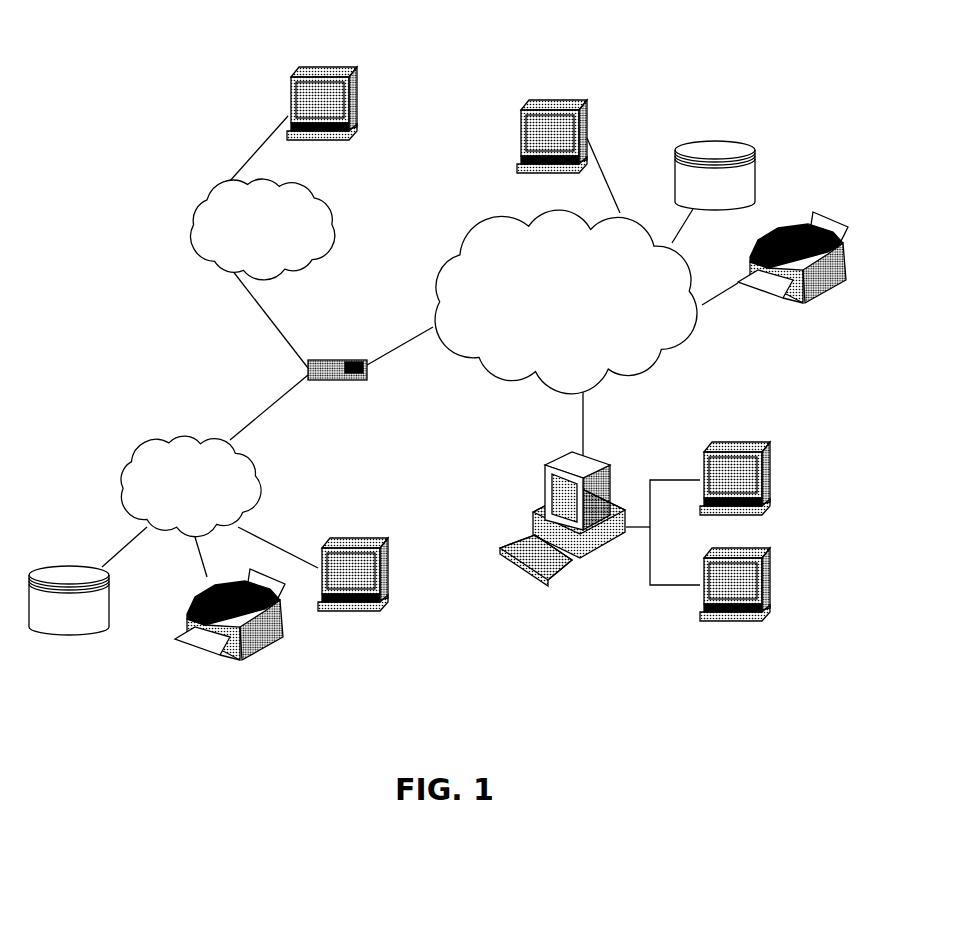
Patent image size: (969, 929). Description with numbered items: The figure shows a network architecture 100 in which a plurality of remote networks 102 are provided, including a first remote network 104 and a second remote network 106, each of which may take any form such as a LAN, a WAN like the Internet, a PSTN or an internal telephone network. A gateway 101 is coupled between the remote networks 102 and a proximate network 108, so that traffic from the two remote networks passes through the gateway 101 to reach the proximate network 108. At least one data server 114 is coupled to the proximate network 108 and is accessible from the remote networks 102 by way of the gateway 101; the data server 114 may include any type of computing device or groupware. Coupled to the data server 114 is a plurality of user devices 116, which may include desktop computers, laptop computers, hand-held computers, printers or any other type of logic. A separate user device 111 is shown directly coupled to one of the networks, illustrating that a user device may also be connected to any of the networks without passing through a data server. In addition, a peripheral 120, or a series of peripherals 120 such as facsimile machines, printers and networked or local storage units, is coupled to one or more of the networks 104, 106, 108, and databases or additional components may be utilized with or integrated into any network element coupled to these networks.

The network architecture 100 is at (238, 44).
The gateway 101 is at (324, 360).
The remote networks 102 is at (176, 248).
The first remote network 104 is at (128, 463).
The second remote network 106 is at (328, 201).
The proximate network 108 is at (666, 365).
The user device 111 is at (588, 109).
The data server 114 is at (600, 556).
The user devices 116 is at (357, 96).
The peripheral 120 is at (755, 152).